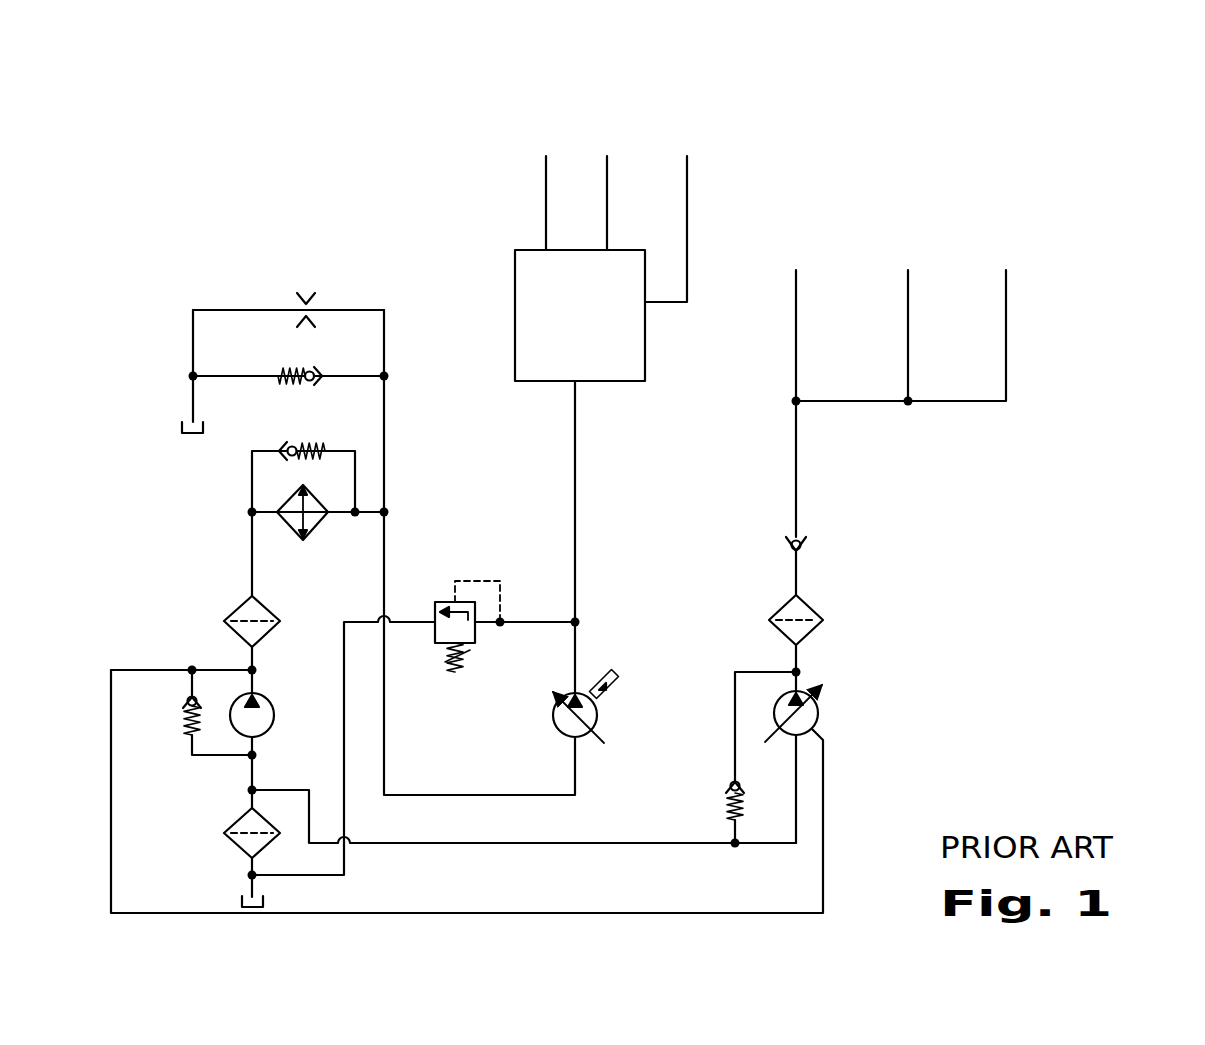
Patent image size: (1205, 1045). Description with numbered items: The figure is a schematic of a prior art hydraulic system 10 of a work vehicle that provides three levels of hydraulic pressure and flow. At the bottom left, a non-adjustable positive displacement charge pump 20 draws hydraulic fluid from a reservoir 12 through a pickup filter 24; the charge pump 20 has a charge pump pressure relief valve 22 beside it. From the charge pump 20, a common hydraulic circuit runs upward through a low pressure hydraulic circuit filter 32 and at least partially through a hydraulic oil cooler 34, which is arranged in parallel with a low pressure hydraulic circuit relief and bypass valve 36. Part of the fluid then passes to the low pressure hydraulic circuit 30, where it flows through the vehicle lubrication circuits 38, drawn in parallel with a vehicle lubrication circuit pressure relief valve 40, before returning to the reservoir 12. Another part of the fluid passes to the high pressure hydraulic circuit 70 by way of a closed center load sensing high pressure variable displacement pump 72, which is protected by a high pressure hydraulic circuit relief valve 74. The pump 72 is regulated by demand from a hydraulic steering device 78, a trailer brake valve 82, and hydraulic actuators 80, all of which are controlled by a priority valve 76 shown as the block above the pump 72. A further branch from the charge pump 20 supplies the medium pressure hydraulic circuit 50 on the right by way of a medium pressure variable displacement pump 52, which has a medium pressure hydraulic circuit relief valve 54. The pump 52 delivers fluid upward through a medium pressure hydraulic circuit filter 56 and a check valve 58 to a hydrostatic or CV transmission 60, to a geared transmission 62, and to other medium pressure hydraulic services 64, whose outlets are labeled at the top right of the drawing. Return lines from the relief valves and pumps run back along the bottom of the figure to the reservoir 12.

The hydraulic system 10 is at (1103, 201).
The reservoir 12 is at (178, 427).
The non-adjustable positive displacement charge pump 20 is at (270, 700).
The charge pump pressure relief valve 22 is at (185, 730).
The pickup filter 24 is at (235, 815).
The low pressure hydraulic circuit 30 is at (187, 217).
The low pressure hydraulic circuit filter 32 is at (230, 602).
The hydraulic oil cooler 34 is at (315, 528).
The low pressure hydraulic circuit relief and bypass valve 36 is at (290, 447).
The vehicle lubrication circuits 38 is at (308, 290).
The vehicle lubrication circuit pressure relief valve 40 is at (283, 370).
The medium pressure hydraulic circuit 50 is at (897, 185).
The medium pressure variable displacement pump 52 is at (822, 710).
The medium pressure hydraulic circuit relief valve 54 is at (727, 788).
The medium pressure hydraulic circuit filter 56 is at (815, 606).
The check valve 58 is at (786, 548).
The hydrostatic or CV transmission 60 is at (805, 265).
The geared transmission 62 is at (1010, 265).
The medium pressure hydraulic services 64 is at (912, 265).
The high pressure hydraulic circuit 70 is at (614, 108).
The closed center load sensing high pressure variable displacement pump 72 is at (568, 737).
The high pressure hydraulic circuit relief valve 74 is at (477, 645).
The priority valve 76 is at (615, 381).
The hydraulic steering device 78 is at (540, 157).
The hydraulic actuators 80 is at (690, 157).
The trailer brake valve 82 is at (612, 158).